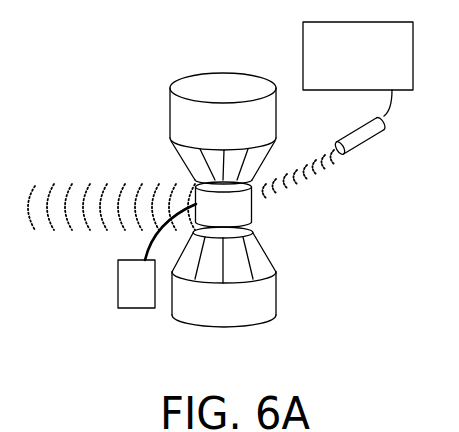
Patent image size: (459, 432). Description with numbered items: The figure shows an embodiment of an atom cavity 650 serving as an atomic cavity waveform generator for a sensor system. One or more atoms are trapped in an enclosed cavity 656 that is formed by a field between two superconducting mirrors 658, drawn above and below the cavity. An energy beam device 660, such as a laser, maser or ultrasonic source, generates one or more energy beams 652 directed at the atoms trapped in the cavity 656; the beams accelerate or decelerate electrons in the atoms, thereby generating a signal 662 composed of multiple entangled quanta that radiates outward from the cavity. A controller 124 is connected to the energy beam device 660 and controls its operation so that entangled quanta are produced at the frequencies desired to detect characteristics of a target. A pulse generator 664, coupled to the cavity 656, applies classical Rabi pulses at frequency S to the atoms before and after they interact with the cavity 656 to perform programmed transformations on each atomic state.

The atom cavity 650 is at (139, 44).
The superconducting mirrors 658 is at (194, 182).
The enclosed cavity 656 is at (224, 204).
The signal 662 is at (99, 182).
The energy beam 652 is at (315, 168).
The energy beam device 660 is at (355, 152).
The controller 124 is at (375, 81).
The pulse generator 664 is at (118, 284).